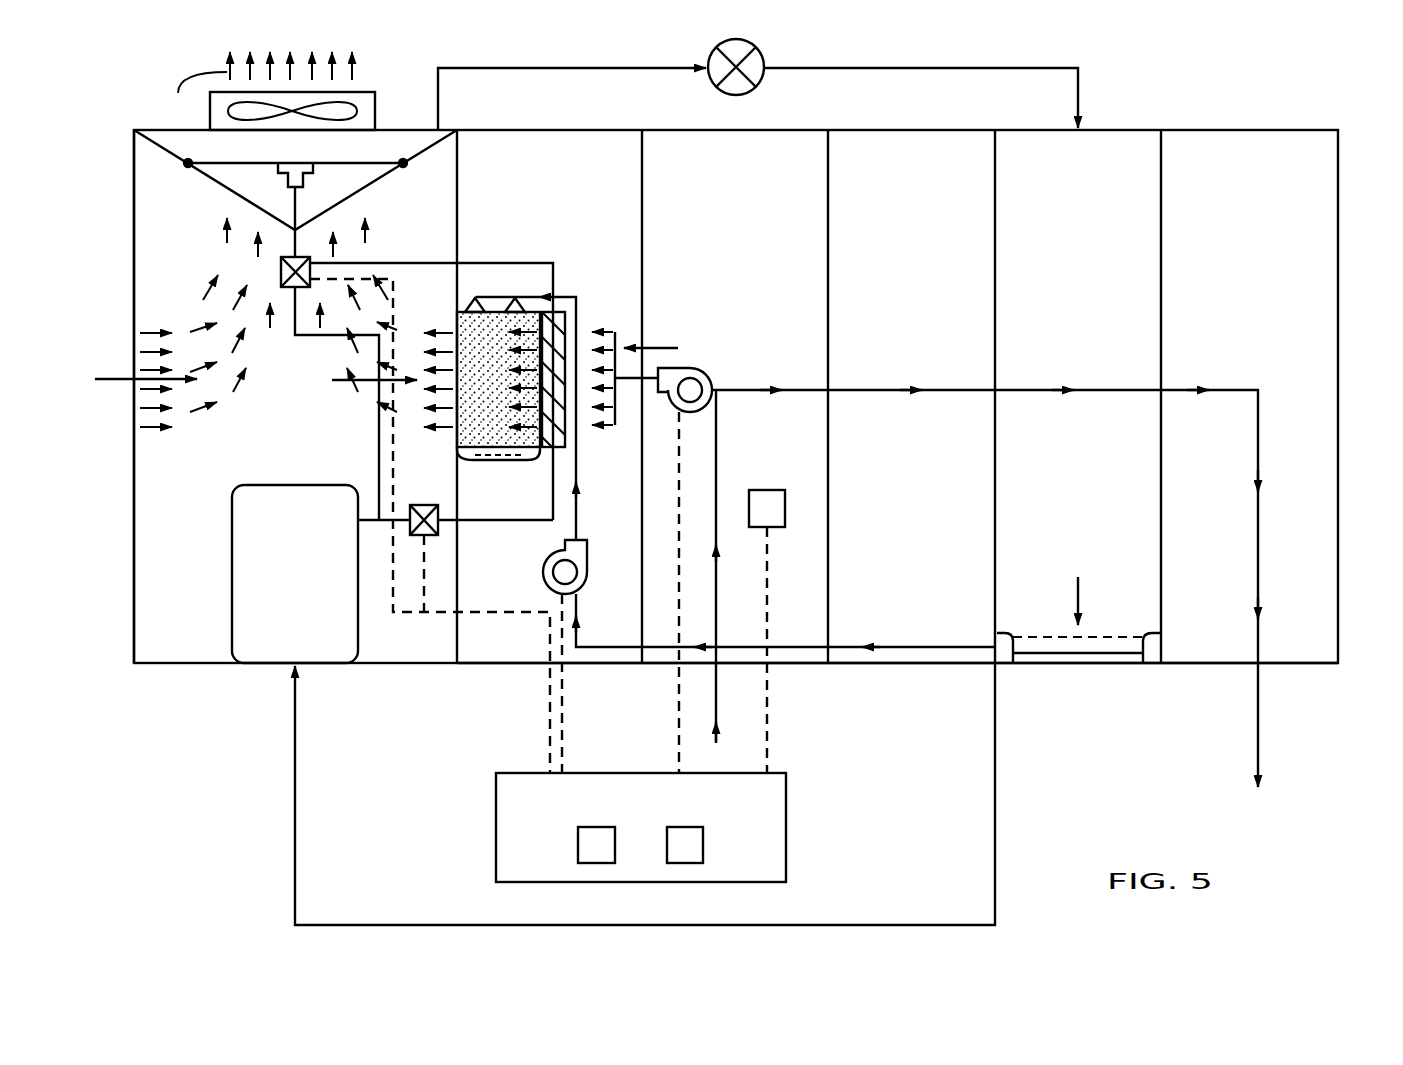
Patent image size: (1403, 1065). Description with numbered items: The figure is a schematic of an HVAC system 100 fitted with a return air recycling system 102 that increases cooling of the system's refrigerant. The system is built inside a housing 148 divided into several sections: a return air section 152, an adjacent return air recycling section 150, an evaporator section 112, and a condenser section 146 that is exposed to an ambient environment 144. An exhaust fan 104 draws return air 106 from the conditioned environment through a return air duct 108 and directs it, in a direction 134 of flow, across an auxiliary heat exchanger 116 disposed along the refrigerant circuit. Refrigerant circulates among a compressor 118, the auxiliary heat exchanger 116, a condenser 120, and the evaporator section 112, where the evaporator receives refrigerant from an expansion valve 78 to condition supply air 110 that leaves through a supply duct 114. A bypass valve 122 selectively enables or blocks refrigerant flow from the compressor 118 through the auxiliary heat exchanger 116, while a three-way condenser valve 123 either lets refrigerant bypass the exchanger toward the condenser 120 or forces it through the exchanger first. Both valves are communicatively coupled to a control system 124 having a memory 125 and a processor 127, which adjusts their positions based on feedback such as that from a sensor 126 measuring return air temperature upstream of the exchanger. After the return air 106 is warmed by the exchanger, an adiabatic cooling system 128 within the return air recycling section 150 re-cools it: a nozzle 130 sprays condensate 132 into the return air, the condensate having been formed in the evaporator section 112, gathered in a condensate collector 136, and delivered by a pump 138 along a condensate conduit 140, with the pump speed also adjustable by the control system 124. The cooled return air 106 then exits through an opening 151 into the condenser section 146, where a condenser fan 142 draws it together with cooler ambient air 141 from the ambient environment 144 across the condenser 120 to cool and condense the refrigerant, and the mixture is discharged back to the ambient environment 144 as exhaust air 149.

The expansion valve 78 is at (716, 54).
The HVAC system 100 is at (145, 80).
The return air recycling system 102 is at (578, 156).
The exhaust fan 104 is at (706, 364).
The return air 106 is at (605, 315).
The return air duct 108 is at (736, 672).
The supply air 110 is at (1262, 436).
The evaporator section 112 is at (1113, 158).
The supply duct 114 is at (1304, 672).
The auxiliary heat exchanger 116 is at (557, 312).
The compressor 118 is at (358, 618).
The condenser 120 is at (186, 160).
The bypass valve 122 is at (438, 528).
The condenser valve 123 is at (280, 270).
The control system 124 is at (496, 830).
The memory 125 is at (578, 840).
The sensor 126 is at (769, 608).
The processor 127 is at (703, 845).
The adiabatic cooling system 128 is at (493, 281).
The nozzle 130 is at (462, 310).
The condensate 132 is at (455, 440).
The direction of flow of the return air 134 is at (657, 348).
The condensate collector 136 is at (1160, 636).
The pump 138 is at (613, 545).
The condensate conduit 140 is at (918, 625).
The ambient air 141 is at (118, 375).
The condenser fan 142 is at (375, 110).
The ambient environment 144 is at (106, 508).
The condenser section 146 is at (360, 36).
The housing 148 is at (1250, 130).
The exhaust air 149 is at (195, 97).
The return air recycling section 150 is at (620, 156).
The opening 151 is at (523, 466).
The return air section 152 is at (760, 156).